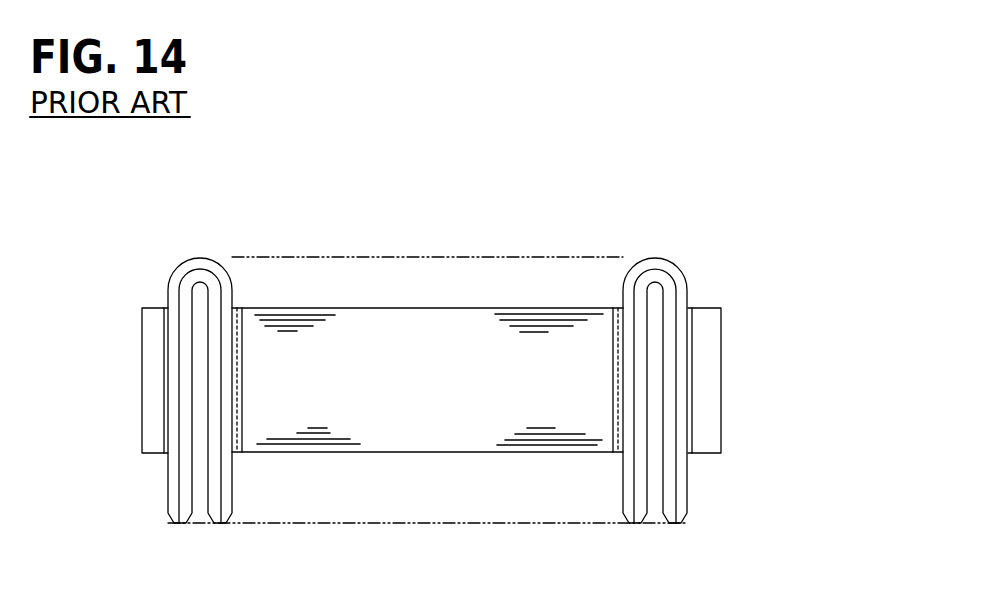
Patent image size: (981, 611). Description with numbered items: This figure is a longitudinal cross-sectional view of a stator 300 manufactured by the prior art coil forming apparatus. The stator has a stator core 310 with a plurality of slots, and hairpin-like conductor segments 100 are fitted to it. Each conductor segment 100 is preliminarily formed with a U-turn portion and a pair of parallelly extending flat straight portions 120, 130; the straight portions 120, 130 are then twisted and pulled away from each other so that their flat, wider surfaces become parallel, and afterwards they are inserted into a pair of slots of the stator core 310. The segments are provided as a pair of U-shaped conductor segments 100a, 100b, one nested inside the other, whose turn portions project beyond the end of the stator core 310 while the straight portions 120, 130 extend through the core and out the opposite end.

The coil (prior art) 300 is at (590, 251).
The stator core 310 is at (713, 370).
The hairpin-like conductor segment 100 is at (730, 366).
The U-shaped conductor segment 100a is at (663, 280).
The U-shaped conductor segment 100b is at (665, 257).
The straight portion 120 is at (632, 455).
The straight portion 130 is at (670, 502).